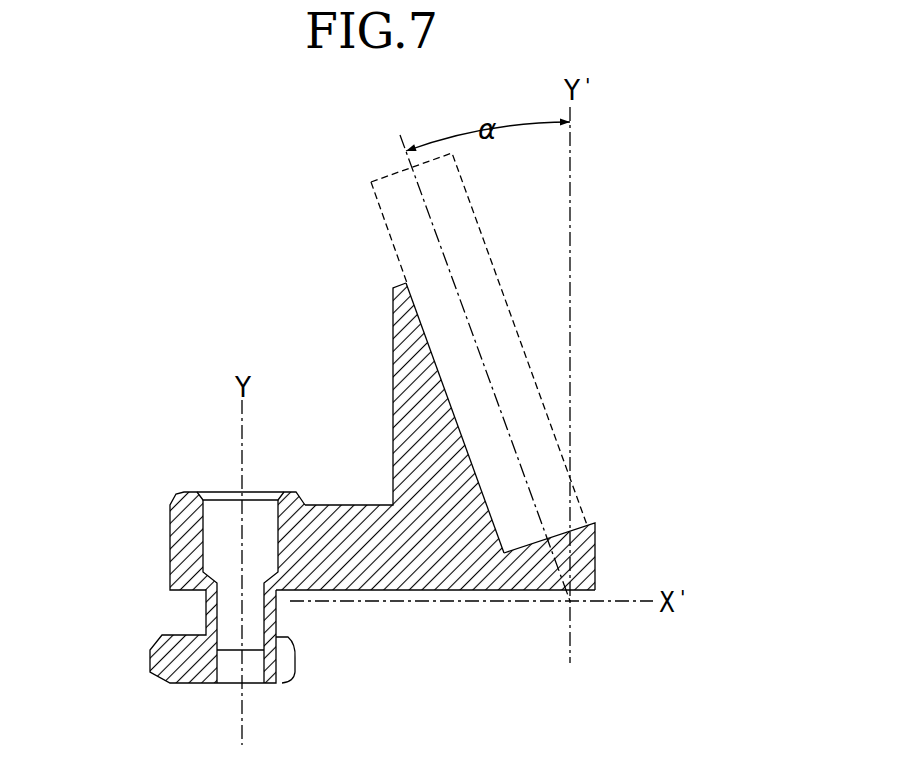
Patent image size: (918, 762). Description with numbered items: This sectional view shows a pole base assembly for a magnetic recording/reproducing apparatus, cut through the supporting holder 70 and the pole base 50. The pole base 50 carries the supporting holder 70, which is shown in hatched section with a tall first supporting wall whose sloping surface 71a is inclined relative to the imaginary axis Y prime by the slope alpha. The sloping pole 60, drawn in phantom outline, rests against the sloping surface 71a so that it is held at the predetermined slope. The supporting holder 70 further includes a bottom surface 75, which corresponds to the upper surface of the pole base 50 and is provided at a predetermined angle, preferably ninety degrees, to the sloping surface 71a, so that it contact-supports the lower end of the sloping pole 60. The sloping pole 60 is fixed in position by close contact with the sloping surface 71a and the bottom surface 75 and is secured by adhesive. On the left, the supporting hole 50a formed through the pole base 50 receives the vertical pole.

The pole base 50 is at (182, 545).
The supporting hole 50a is at (205, 520).
The sloping pole 60 is at (396, 252).
The supporting holder 70 is at (383, 387).
The sloping surface 71a is at (456, 420).
The bottom surface 75 is at (583, 520).